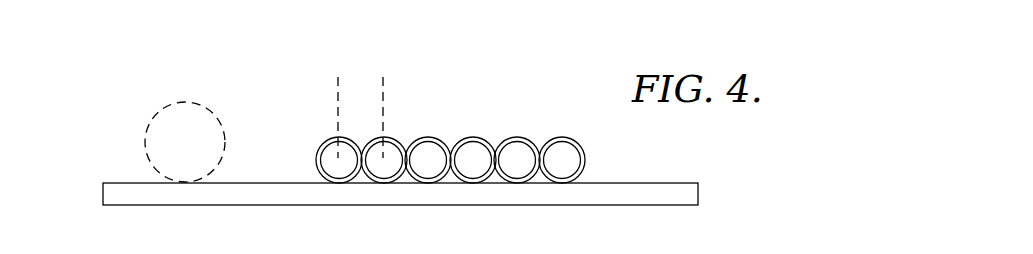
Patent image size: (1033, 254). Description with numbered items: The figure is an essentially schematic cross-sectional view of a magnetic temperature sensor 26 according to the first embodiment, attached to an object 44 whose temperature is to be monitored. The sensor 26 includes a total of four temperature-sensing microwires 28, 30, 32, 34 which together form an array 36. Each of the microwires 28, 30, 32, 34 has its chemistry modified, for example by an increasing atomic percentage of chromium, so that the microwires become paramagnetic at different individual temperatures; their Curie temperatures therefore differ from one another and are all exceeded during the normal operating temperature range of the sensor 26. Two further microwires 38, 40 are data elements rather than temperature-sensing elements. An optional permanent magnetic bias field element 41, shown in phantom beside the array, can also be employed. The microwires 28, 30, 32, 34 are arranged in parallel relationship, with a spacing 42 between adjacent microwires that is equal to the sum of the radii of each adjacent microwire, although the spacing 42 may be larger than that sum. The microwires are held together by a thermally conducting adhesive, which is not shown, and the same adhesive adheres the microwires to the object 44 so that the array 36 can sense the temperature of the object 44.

The temperature sensor 26 is at (575, 87).
The temperature-sensing microwire 28 is at (474, 138).
The temperature-sensing microwire 30 is at (431, 139).
The temperature-sensing microwire 32 is at (386, 140).
The temperature-sensing microwire 34 is at (323, 141).
The array 36 is at (495, 209).
The data element microwire 38 is at (527, 138).
The data element microwire 40 is at (580, 143).
The permanent magnetic bias field element 41 is at (180, 102).
The spacing 42 is at (383, 77).
The object 44 is at (693, 192).